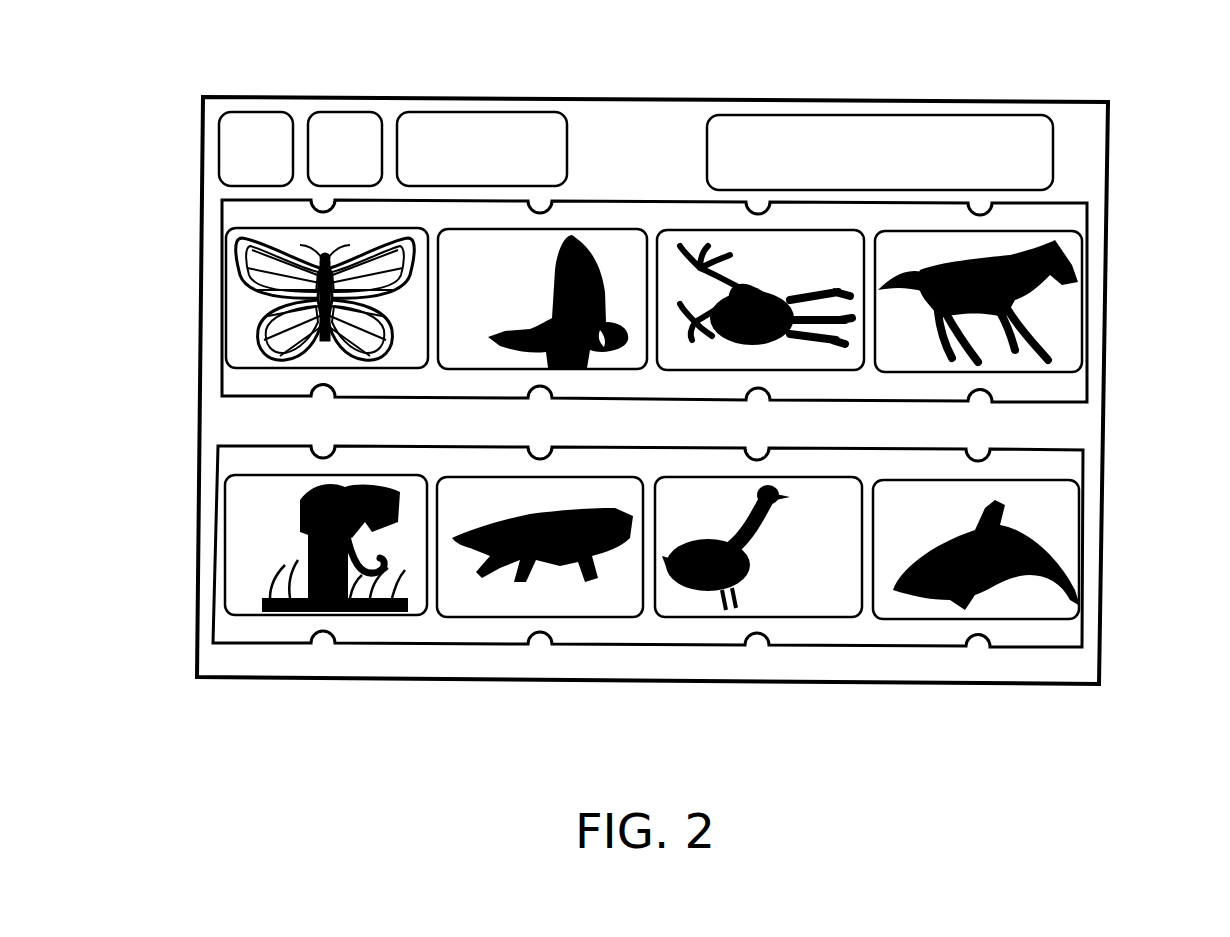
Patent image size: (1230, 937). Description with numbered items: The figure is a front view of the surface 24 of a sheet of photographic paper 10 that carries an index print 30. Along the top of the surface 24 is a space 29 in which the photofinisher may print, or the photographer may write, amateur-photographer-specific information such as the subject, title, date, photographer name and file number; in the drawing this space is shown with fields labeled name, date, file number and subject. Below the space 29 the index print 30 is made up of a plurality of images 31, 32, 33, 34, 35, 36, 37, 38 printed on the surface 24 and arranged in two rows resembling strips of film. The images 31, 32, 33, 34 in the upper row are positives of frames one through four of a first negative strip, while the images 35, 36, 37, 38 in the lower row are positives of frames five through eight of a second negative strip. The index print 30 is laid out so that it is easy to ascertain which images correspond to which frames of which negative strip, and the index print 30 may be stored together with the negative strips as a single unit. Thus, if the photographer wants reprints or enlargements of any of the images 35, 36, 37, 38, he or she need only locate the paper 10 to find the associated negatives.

The photographic paper 10 is at (353, 53).
The surface 24 is at (203, 122).
The space 29 is at (613, 128).
The index print 30 is at (237, 295).
The image 31 is at (318, 257).
The image 32 is at (538, 257).
The image 33 is at (762, 257).
The image 34 is at (985, 257).
The image 35 is at (338, 617).
The image 36 is at (548, 580).
The image 37 is at (770, 580).
The image 38 is at (993, 583).